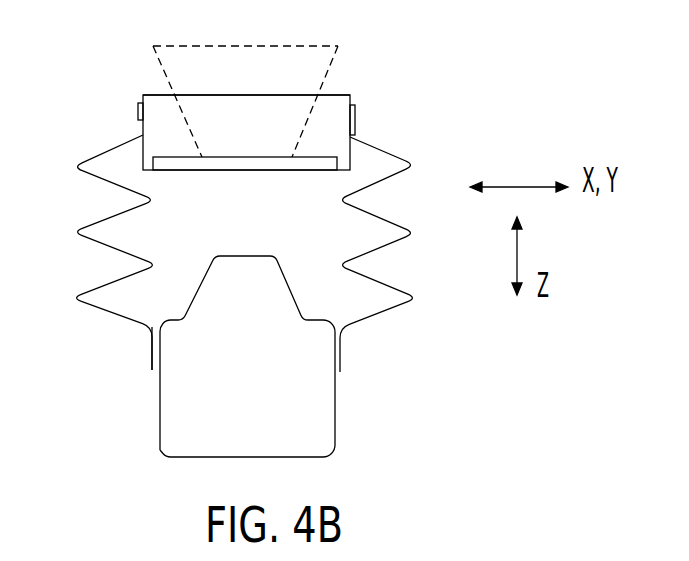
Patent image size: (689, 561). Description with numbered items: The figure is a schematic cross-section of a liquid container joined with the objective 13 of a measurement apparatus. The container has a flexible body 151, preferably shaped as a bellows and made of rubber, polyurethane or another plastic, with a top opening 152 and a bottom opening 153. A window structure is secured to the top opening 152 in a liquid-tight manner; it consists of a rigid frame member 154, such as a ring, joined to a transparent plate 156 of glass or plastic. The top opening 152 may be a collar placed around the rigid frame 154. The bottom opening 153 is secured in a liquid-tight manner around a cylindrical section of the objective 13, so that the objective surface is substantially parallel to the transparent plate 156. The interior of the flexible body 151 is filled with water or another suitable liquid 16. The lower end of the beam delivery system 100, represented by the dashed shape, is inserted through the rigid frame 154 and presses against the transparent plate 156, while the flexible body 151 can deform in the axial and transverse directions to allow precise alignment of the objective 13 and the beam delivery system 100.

The beam delivery system 100 is at (330, 72).
The top opening 152 is at (140, 124).
The rigid frame member 154 is at (165, 110).
The transparent plate 156 is at (338, 158).
The flexible body 151 is at (73, 233).
The bottom opening 153 is at (152, 350).
The objective 13 is at (186, 421).
The liquid 16 is at (277, 217).